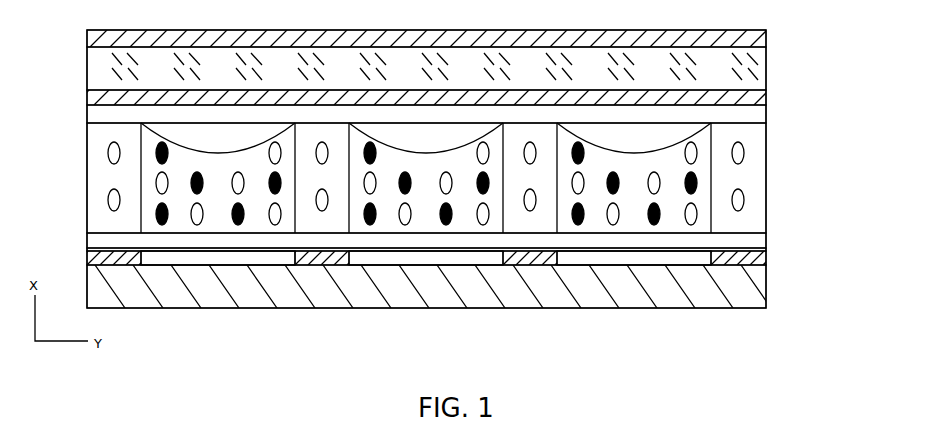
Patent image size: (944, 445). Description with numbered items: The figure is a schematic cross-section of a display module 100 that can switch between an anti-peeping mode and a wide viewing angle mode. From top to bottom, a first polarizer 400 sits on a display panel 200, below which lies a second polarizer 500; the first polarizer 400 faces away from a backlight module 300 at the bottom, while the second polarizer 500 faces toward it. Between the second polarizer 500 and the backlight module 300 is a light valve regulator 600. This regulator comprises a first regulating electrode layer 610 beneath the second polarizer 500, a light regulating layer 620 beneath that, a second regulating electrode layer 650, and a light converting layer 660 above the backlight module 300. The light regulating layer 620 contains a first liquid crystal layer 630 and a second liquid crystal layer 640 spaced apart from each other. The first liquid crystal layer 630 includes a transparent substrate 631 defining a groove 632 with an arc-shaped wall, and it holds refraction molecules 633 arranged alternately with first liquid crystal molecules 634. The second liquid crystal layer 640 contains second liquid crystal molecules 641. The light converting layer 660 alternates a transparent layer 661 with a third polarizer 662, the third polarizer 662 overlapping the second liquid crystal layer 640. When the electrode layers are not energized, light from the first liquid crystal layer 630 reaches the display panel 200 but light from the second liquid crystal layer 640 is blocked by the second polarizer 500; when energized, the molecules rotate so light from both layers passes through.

The display module 100 is at (733, 12).
The first polarizer 400 is at (752, 38).
The display panel 200 is at (750, 68).
The second polarizer 500 is at (752, 96).
The light valve regulator 600 is at (87, 265).
The first regulating electrode layer 610 is at (750, 116).
The light regulating layer 620 is at (490, 195).
The first liquid crystal layer 630 is at (470, 233).
The transparent substrate 631 is at (699, 180).
The groove 632 is at (642, 151).
The refraction molecule 633 is at (446, 225).
The first liquid crystal molecule 634 is at (403, 221).
The second liquid crystal layer 640 is at (449, 232).
The second liquid crystal molecule 641 is at (742, 201).
The second regulating electrode layer 650 is at (750, 243).
The light converting layer 660 is at (425, 314).
The transparent layer 661 is at (598, 258).
The third polarizer 662 is at (540, 255).
The backlight module 300 is at (750, 274).